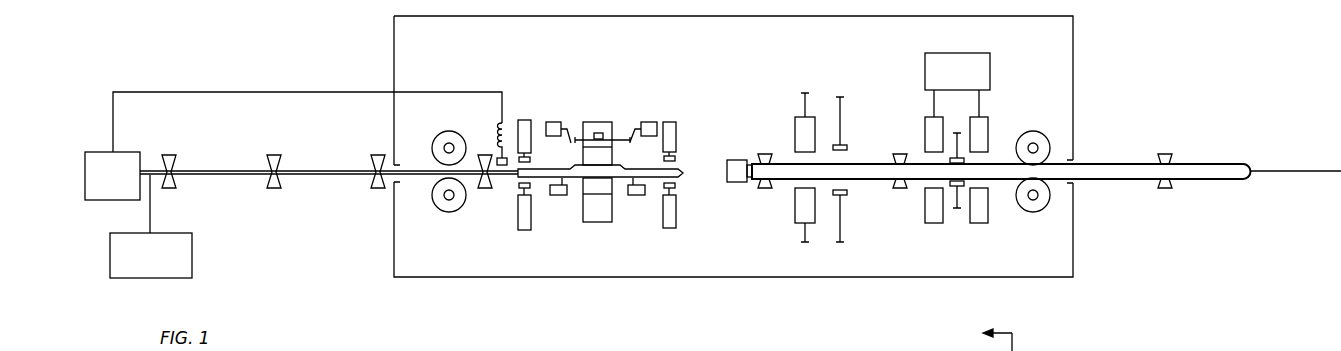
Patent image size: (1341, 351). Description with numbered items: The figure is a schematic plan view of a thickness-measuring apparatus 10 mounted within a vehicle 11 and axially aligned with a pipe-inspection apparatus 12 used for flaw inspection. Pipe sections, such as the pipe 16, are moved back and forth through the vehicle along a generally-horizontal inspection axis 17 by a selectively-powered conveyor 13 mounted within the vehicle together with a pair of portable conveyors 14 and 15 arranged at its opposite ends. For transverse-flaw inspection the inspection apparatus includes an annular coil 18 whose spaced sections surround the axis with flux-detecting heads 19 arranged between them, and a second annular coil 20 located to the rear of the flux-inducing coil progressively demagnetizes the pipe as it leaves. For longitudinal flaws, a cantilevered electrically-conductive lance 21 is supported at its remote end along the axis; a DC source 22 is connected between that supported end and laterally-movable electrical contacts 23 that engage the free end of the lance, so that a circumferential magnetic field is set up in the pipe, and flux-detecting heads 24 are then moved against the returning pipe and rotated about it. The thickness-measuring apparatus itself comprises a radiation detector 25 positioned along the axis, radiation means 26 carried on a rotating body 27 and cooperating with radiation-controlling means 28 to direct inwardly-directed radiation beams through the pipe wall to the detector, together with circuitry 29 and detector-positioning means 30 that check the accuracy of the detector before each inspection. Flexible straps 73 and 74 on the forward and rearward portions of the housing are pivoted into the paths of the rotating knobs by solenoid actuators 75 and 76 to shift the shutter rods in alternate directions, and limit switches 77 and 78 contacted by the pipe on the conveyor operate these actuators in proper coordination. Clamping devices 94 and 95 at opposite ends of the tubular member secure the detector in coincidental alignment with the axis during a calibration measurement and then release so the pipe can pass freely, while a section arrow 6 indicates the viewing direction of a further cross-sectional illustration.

The section line 6 is at (1007, 336).
The thickness-measuring apparatus 10 is at (621, 70).
The vehicle 11 is at (1050, 266).
The pipe-inspection apparatus 12 is at (851, 75).
The conveyor 13 is at (901, 190).
The portable conveyor 14 is at (276, 190).
The portable conveyor 15 is at (1165, 190).
The pipe section 16 is at (1114, 163).
The inspection axis 17 is at (1311, 173).
The annular coil 18 is at (990, 127).
The flux-detecting heads 19 is at (965, 187).
The second annular coil 20 is at (795, 215).
The lance 21 is at (231, 177).
The DC source 22 is at (124, 185).
The electrical contacts 23 is at (497, 157).
The flux-detecting heads 24 is at (848, 148).
The radiation detector 25 is at (585, 172).
The radiation means 26 is at (600, 133).
The rotating body 27 is at (607, 216).
The radiation-controlling means 28 is at (622, 127).
The circuitry 29 is at (162, 264).
The detector-positioning means 30 is at (498, 220).
The strap 73 is at (569, 140).
The strap 74 is at (633, 143).
The solenoid actuator 75 is at (552, 122).
The solenoid actuator 76 is at (657, 122).
The limit switch 77 is at (561, 196).
The limit switch 78 is at (638, 196).
The clamping device 94 is at (519, 115).
The clamping device 95 is at (683, 138).